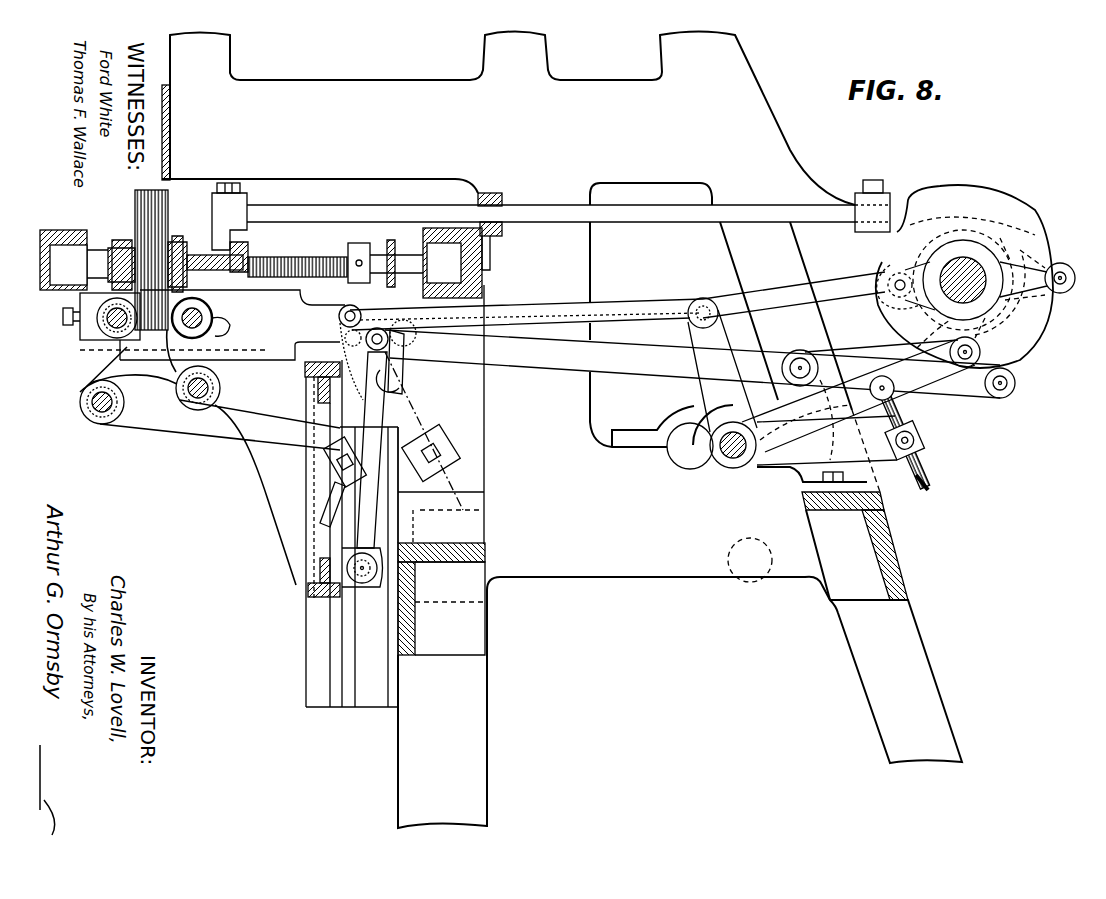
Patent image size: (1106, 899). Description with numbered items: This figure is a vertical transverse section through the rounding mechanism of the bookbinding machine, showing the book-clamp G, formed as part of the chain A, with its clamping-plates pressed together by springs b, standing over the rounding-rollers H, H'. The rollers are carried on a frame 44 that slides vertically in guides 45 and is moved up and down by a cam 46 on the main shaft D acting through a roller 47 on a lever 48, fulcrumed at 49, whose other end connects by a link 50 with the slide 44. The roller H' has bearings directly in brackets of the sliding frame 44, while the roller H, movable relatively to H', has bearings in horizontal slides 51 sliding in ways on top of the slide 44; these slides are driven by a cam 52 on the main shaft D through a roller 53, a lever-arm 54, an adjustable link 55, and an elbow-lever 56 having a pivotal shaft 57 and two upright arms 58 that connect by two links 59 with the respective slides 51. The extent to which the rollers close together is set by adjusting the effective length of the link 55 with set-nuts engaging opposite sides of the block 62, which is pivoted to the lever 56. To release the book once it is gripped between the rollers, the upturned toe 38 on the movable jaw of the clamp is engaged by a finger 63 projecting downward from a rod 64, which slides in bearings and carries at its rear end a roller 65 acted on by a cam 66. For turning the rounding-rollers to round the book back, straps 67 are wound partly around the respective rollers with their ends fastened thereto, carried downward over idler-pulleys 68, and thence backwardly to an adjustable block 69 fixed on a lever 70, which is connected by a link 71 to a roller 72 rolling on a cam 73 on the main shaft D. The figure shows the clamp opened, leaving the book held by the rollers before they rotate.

The shaft c is at (135, 199).
The book-clamp G is at (178, 226).
The finger 63 is at (229, 216).
The upturned toe 38 is at (249, 250).
The springs b is at (291, 257).
The chain A is at (401, 263).
The rod 64 is at (557, 214).
The rounding-roller H is at (93, 327).
The rounding-roller H' is at (210, 319).
The horizontal slides 51 is at (232, 325).
The idler-pulleys 68 is at (212, 386).
The straps 67 is at (277, 430).
The frame 44 is at (305, 384).
The guides 45 is at (352, 627).
The link 50 is at (372, 518).
The lever 70 is at (399, 362).
The adjustable block 69 is at (328, 467).
The links 59 is at (557, 308).
The link 71 is at (760, 299).
The lever 48 is at (692, 364).
The upright arms 58 is at (722, 365).
The pivotal shaft 57 is at (730, 457).
The fulcrum 49 is at (800, 360).
The lever-arm 54 is at (858, 400).
The elbow-lever 56 is at (827, 440).
The block 62 is at (920, 440).
The adjustable link 55 is at (933, 486).
The roller 53 is at (977, 352).
The roller 47 is at (1005, 387).
The cam 46 is at (1022, 350).
The cam 73 is at (978, 247).
The main shaft D is at (963, 280).
The cam 66 is at (1030, 326).
The roller 65 is at (1075, 278).
The roller 72 is at (888, 280).
The cam 52 is at (929, 335).